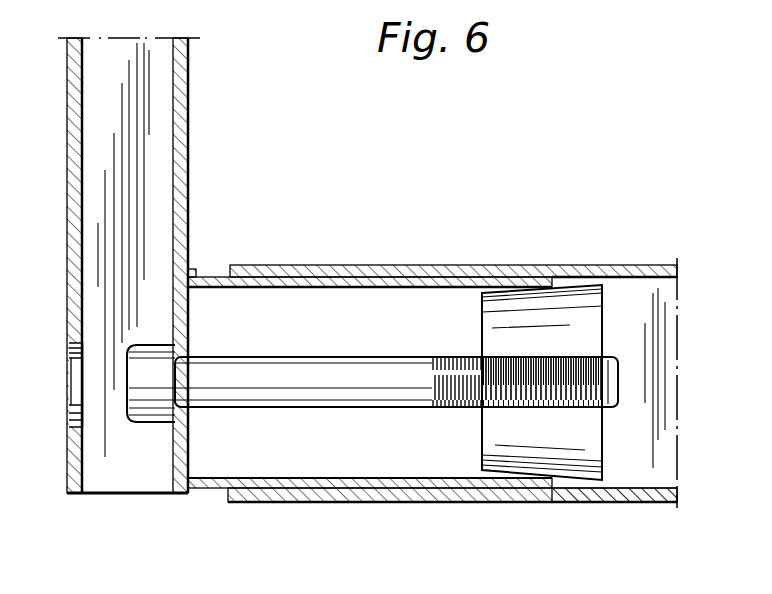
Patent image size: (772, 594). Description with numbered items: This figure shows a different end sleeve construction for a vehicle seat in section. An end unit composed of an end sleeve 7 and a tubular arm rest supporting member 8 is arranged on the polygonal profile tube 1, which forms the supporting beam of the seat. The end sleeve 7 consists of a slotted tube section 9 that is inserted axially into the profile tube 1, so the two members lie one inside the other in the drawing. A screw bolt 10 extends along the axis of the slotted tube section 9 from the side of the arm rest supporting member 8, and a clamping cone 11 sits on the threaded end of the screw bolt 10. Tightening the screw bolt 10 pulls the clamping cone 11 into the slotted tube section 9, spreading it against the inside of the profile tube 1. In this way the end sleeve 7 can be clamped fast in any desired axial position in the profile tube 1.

The profile tube 1 is at (638, 494).
The end sleeve 7 is at (206, 267).
The tubular arm rest supporting member 8 is at (80, 135).
The slotted tube section 9 is at (208, 489).
The screw bolt 10 is at (325, 368).
The clamping cone 11 is at (587, 452).